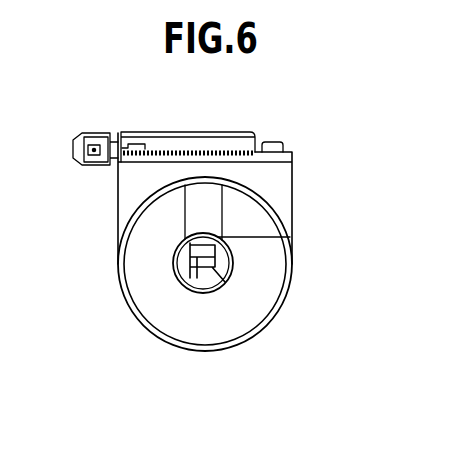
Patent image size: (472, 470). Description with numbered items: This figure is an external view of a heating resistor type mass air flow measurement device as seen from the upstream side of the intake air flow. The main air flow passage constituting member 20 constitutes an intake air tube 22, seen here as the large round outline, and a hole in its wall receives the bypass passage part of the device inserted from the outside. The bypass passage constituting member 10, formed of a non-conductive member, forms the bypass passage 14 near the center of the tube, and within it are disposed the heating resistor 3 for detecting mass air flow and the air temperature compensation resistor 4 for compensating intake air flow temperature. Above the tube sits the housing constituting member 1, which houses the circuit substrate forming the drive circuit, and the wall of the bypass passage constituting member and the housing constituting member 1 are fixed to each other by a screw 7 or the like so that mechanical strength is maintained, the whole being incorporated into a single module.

The housing constituting member 1 is at (212, 131).
The heating resistor 3 is at (220, 283).
The air temperature compensation resistor 4 is at (290, 237).
The screw 7 is at (138, 145).
The bypass passage constituting member 10 is at (205, 293).
The bypass passage 14 is at (190, 290).
The main air flow passage constituting member 20 is at (270, 211).
The intake air tube 22 is at (238, 305).